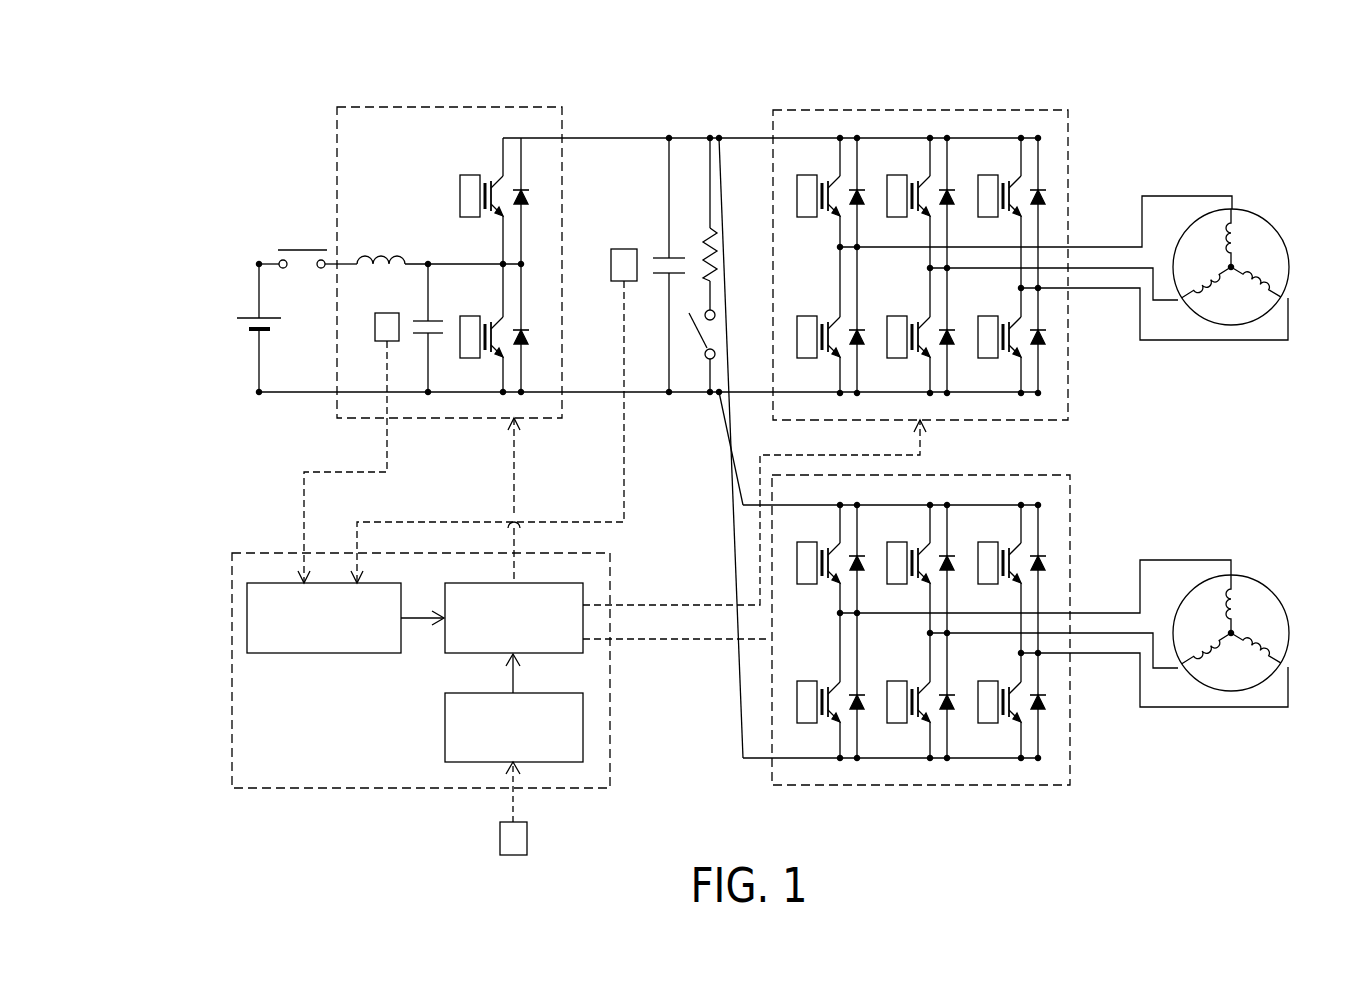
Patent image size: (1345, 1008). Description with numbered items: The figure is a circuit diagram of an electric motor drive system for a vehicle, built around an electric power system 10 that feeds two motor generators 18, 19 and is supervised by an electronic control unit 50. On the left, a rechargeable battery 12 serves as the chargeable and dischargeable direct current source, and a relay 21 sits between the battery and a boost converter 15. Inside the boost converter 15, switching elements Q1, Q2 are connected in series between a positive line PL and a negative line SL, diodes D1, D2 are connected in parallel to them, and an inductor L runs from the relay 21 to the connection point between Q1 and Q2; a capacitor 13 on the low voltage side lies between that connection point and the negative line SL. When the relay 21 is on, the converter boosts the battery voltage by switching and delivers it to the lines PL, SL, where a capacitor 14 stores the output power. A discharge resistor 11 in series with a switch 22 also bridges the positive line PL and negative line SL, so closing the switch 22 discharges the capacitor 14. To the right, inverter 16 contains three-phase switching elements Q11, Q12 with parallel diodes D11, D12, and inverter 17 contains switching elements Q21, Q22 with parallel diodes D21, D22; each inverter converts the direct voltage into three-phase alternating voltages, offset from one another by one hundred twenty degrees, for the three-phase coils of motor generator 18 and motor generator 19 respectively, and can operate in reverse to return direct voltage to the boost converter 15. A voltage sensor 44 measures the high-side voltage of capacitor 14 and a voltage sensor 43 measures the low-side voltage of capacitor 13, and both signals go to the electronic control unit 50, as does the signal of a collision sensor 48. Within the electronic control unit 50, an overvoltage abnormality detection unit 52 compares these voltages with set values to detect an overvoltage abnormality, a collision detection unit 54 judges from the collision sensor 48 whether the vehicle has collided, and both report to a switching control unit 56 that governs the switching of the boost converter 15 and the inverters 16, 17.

The electric power system 10 is at (782, 72).
The discharge resistor 11 is at (706, 228).
The rechargeable battery 12 is at (250, 316).
The capacitor 13 is at (420, 318).
The capacitor 14 is at (655, 280).
The boost converter 15 is at (448, 418).
The inverter 16 is at (1078, 510).
The inverter 17 is at (1078, 142).
The motor generator 18 is at (1257, 580).
The motor generator 19 is at (1257, 212).
The relay 21 is at (300, 248).
The switch 22 is at (700, 345).
The voltage sensor 43 is at (376, 328).
The voltage sensor 44 is at (624, 248).
The collision sensor 48 is at (497, 840).
The electronic control unit 50 is at (232, 692).
The overvoltage abnormality detection unit 52 is at (247, 617).
The collision detection unit 54 is at (445, 723).
The switching control unit 56 is at (443, 645).
The inductor L is at (372, 255).
The positive line PL is at (695, 131).
The negative line SL is at (678, 396).
The switching element Q1 is at (466, 176).
The switching element Q2 is at (466, 316).
The diode D1 is at (529, 192).
The diode D2 is at (529, 337).
The switching element Q11 is at (803, 543).
The switching element Q12 is at (804, 681).
The diode D11 is at (865, 563).
The diode D12 is at (865, 702).
The switching element Q21 is at (803, 176).
The switching element Q22 is at (804, 316).
The diode D21 is at (865, 197).
The diode D22 is at (865, 336).